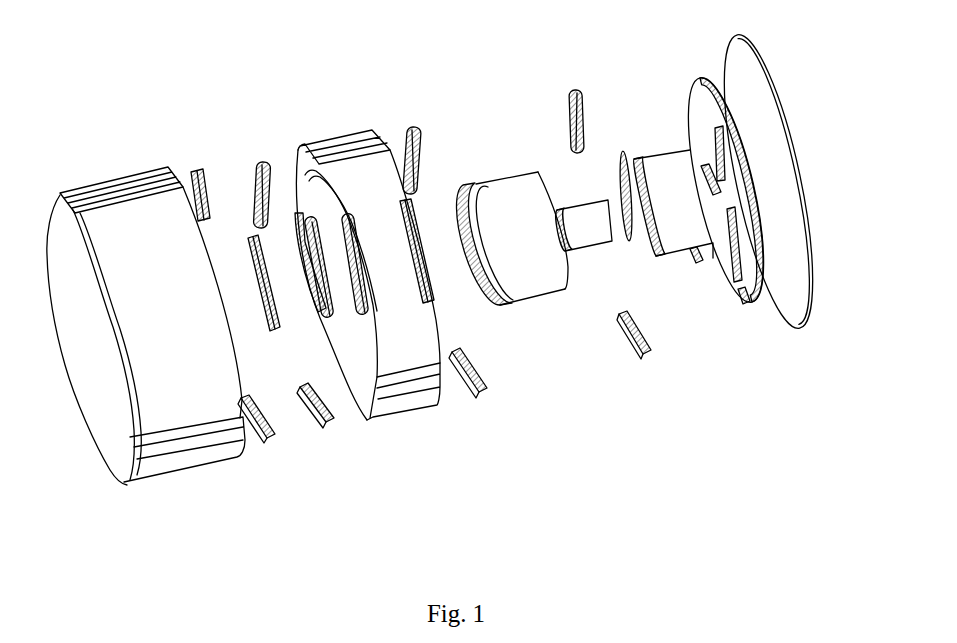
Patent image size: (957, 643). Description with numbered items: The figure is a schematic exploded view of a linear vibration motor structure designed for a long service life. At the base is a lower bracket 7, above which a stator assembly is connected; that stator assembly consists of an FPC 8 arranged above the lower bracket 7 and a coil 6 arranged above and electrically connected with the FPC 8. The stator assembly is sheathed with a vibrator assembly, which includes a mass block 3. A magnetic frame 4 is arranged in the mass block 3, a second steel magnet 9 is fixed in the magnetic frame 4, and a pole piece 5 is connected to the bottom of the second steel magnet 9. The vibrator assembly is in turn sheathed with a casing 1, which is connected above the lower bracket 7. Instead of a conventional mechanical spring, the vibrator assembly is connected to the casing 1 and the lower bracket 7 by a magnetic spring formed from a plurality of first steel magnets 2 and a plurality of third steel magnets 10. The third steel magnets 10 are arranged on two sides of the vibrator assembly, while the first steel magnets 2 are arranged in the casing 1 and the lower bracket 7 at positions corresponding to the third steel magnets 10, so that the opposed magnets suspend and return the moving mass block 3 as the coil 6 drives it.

The casing 1 is at (118, 206).
The first steel magnet 2 is at (197, 180).
The mass block 3 is at (377, 200).
The magnetic frame 4 is at (514, 182).
The pole piece 5 is at (620, 203).
The coil 6 is at (662, 170).
The lower bracket 7 is at (804, 288).
The FPC 8 is at (738, 292).
The second steel magnet 9 is at (588, 252).
The third steel magnet 10 is at (326, 425).